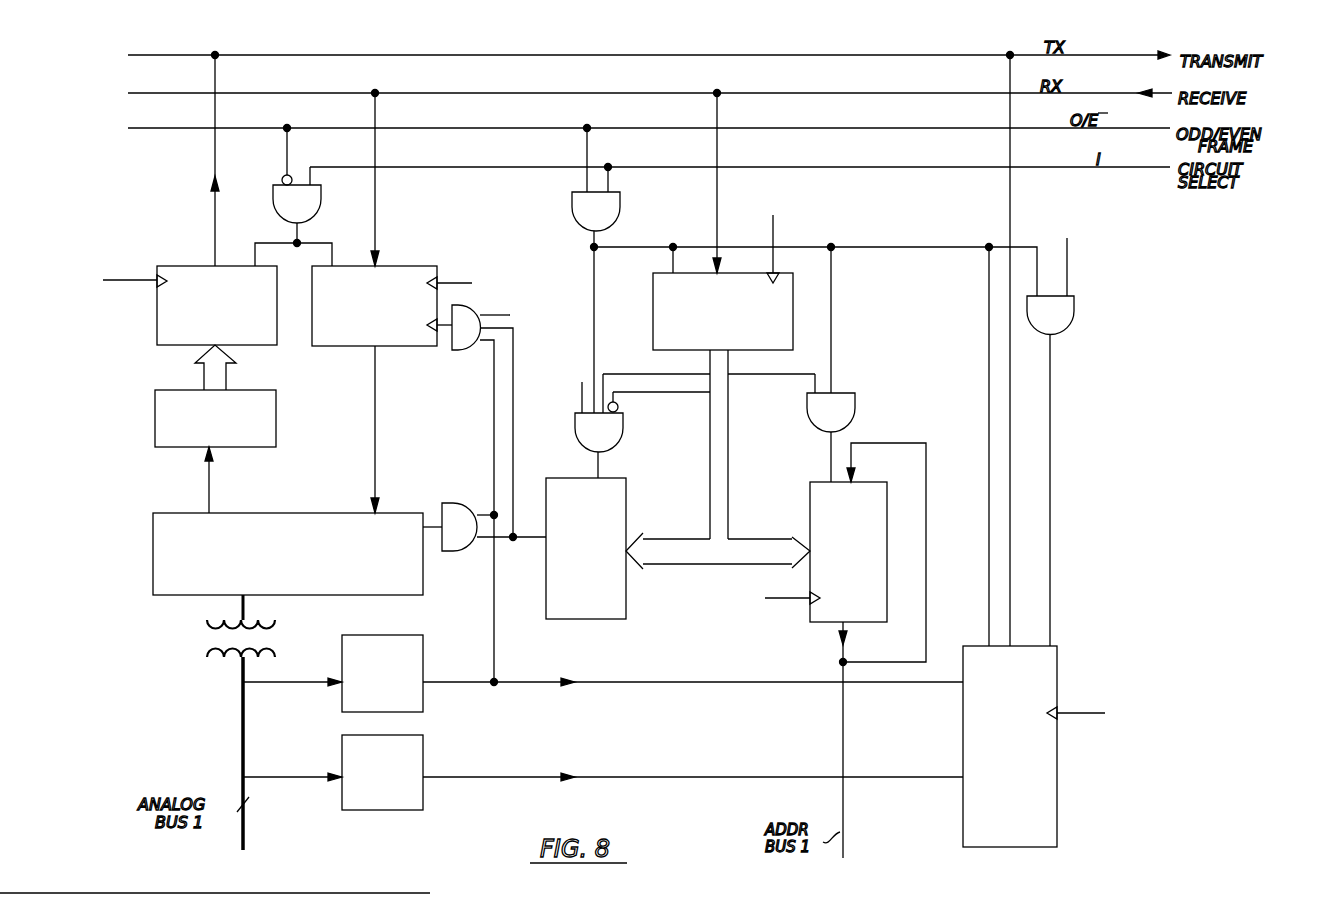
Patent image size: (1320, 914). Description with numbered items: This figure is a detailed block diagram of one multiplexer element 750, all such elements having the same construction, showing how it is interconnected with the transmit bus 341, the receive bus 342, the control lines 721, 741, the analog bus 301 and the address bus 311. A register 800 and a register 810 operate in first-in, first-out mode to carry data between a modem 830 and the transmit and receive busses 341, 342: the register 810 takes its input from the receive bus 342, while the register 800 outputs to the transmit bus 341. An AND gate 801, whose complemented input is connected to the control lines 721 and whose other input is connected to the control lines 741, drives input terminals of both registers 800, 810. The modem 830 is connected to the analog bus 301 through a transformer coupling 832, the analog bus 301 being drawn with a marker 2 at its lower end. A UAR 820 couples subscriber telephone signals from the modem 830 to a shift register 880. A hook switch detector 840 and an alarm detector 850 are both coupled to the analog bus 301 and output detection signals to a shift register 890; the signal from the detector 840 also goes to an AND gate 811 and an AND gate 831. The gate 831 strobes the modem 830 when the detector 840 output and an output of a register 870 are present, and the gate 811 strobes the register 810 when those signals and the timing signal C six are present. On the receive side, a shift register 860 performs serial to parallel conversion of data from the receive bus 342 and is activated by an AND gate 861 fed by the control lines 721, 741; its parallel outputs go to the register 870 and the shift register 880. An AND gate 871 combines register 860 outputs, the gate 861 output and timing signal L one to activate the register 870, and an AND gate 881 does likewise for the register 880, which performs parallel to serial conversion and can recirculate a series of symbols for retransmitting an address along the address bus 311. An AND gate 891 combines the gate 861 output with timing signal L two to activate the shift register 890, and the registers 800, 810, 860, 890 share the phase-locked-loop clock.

The transmit bus 341 is at (870, 56).
The receive bus 342 is at (870, 94).
The control line 721 is at (870, 129).
The control line 741 is at (870, 168).
The AND gate 801 is at (273, 201).
The register 800 is at (196, 266).
The register 810 is at (403, 266).
The AND gate 811 is at (470, 352).
The UAR 820 is at (155, 420).
The modem 830 is at (153, 530).
The AND gate 831 is at (455, 505).
The transformer coupling 832 is at (205, 628).
The analog bus 301 is at (243, 722).
The multiplexer element 750 is at (184, 699).
The two-wire analog bus 2 is at (215, 822).
The hook switch detector 840 is at (398, 635).
The alarm detector 850 is at (450, 742).
The AND gate 861 is at (572, 205).
The shift register 860 is at (653, 338).
The AND gate 871 is at (575, 430).
The register 870 is at (626, 492).
The AND gate 881 is at (855, 410).
The shift register 880 is at (808, 622).
The AND gate 891 is at (926, 556).
The address bus 311 is at (843, 745).
The shift register 890 is at (1057, 660).